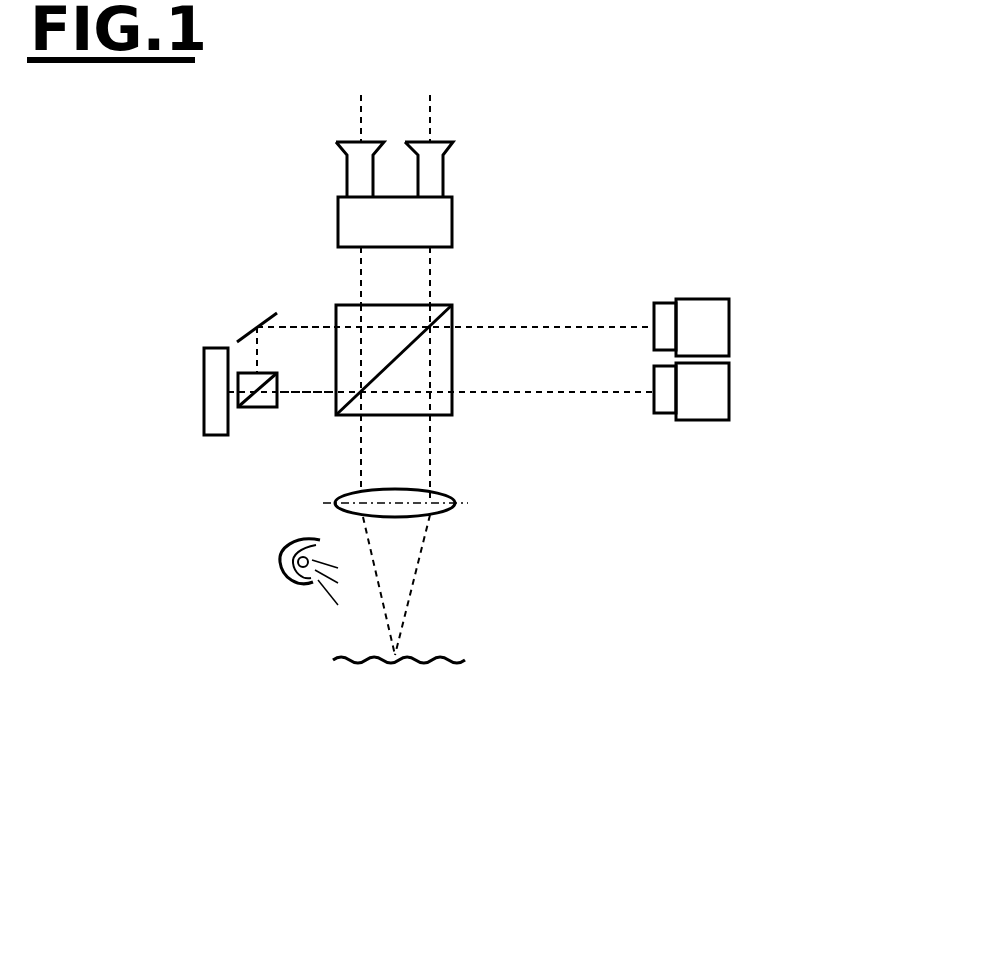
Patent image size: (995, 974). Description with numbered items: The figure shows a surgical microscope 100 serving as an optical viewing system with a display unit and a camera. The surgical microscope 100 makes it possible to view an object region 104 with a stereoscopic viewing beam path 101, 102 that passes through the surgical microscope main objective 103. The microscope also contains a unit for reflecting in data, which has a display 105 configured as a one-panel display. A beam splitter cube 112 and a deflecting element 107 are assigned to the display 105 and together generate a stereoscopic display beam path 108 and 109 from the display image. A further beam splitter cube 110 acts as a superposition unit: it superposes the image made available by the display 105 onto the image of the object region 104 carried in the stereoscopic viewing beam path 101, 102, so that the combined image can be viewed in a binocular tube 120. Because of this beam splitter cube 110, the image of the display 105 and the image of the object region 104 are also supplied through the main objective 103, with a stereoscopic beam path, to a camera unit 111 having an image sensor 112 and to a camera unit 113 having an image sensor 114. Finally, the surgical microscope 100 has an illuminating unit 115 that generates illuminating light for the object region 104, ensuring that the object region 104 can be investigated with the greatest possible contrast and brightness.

The surgical microscope 100 is at (705, 238).
The stereoscopic viewing beam path 101 is at (360, 448).
The stereoscopic viewing beam path 102 is at (433, 452).
The surgical microscope main objective 103 is at (442, 510).
The object region 104 is at (442, 660).
The display 105 is at (213, 375).
The deflecting element 107 is at (273, 313).
The stereoscopic display beam path 108 is at (307, 328).
The stereoscopic display beam path 109 is at (313, 393).
The beam splitter cube 110 is at (453, 318).
The camera unit 111 is at (718, 323).
The beam splitter cube / image sensor 112 is at (267, 403).
The camera unit 113 is at (718, 408).
The image sensor 114 is at (667, 408).
The illuminating unit 115 is at (287, 577).
The binocular tube 120 is at (340, 217).